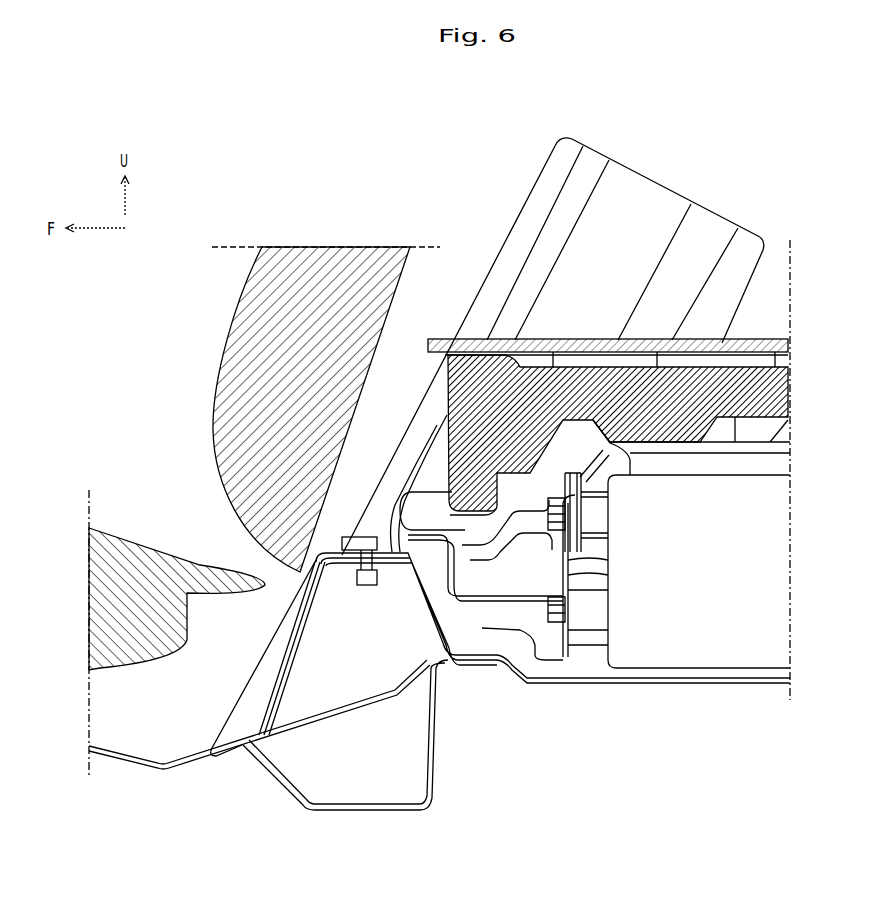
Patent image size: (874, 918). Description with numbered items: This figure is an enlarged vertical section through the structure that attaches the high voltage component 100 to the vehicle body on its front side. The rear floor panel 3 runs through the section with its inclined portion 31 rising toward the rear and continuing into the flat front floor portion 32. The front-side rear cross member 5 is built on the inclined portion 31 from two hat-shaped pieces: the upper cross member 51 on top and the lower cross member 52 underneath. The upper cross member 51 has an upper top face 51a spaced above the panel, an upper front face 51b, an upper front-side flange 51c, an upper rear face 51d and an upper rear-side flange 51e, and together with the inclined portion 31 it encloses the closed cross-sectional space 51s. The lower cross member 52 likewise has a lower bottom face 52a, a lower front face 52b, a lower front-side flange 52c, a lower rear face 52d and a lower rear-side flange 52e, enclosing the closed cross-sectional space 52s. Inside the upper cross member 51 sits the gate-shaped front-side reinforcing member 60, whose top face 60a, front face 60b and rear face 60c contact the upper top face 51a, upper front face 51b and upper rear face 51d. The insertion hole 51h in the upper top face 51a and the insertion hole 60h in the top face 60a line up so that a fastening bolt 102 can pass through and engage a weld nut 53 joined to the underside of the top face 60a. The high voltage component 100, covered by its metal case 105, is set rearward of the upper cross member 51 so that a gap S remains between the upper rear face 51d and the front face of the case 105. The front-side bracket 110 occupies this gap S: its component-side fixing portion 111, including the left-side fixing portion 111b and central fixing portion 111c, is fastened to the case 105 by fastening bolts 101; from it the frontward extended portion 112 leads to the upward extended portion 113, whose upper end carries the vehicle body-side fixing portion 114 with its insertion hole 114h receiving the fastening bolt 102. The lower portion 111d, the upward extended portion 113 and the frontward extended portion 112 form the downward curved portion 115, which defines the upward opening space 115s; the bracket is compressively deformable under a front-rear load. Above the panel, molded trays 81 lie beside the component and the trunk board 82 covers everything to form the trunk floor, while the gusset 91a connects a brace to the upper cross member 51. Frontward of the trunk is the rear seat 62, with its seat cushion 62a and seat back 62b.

The rear floor panel 3 is at (605, 688).
The front-side rear cross member 5 is at (450, 792).
The inclined portion 31 is at (338, 714).
The front floor portion 32 is at (690, 690).
The upper cross member 51 is at (282, 656).
The upper top face 51a is at (345, 553).
The upper front face 51b is at (297, 612).
The upper front-side flange 51c is at (228, 742).
The upper rear face 51d is at (432, 628).
The upper rear-side flange 51e is at (505, 672).
The insertion hole 51h is at (330, 552).
The closed cross-sectional space 51s is at (370, 690).
The lower cross member 52 is at (433, 805).
The lower bottom face 52a is at (365, 810).
The lower front face 52b is at (292, 792).
The lower front-side flange 52c is at (240, 752).
The lower rear face 52d is at (437, 760).
The lower rear-side flange 52e is at (482, 668).
The closed cross-sectional space 52s is at (371, 773).
The weld nut 53 is at (375, 582).
The front-side reinforcing member 60 is at (307, 605).
The top face 60a is at (345, 566).
The front face 60b is at (300, 648).
The rear face 60c is at (422, 585).
The insertion hole 60h is at (330, 548).
The rear seat 62 is at (160, 398).
The seat cushion 62a is at (125, 527).
The seat back 62b is at (230, 331).
The molded tray 81 is at (790, 353).
The trunk board 82 is at (760, 338).
The gusset 91a is at (500, 226).
The high voltage component 100 is at (775, 440).
The fastening bolt 101 is at (558, 490).
The fastening bolt 102 is at (362, 537).
The case 105 is at (782, 574).
The front-side bracket 110 is at (553, 668).
The component-side fixing portion 111 is at (578, 560).
The left-side fixing portion 111b is at (580, 540).
The central fixing portion 111c is at (580, 640).
The lower portion 111d is at (578, 586).
The frontward extended portion 112 is at (490, 594).
The upward extended portion 113 is at (462, 580).
The vehicle body-side fixing portion 114 is at (436, 548).
The insertion hole 114h is at (398, 520).
The downward curved portion 115 is at (520, 640).
The upward opening space 115s is at (525, 555).
The gap S is at (532, 728).